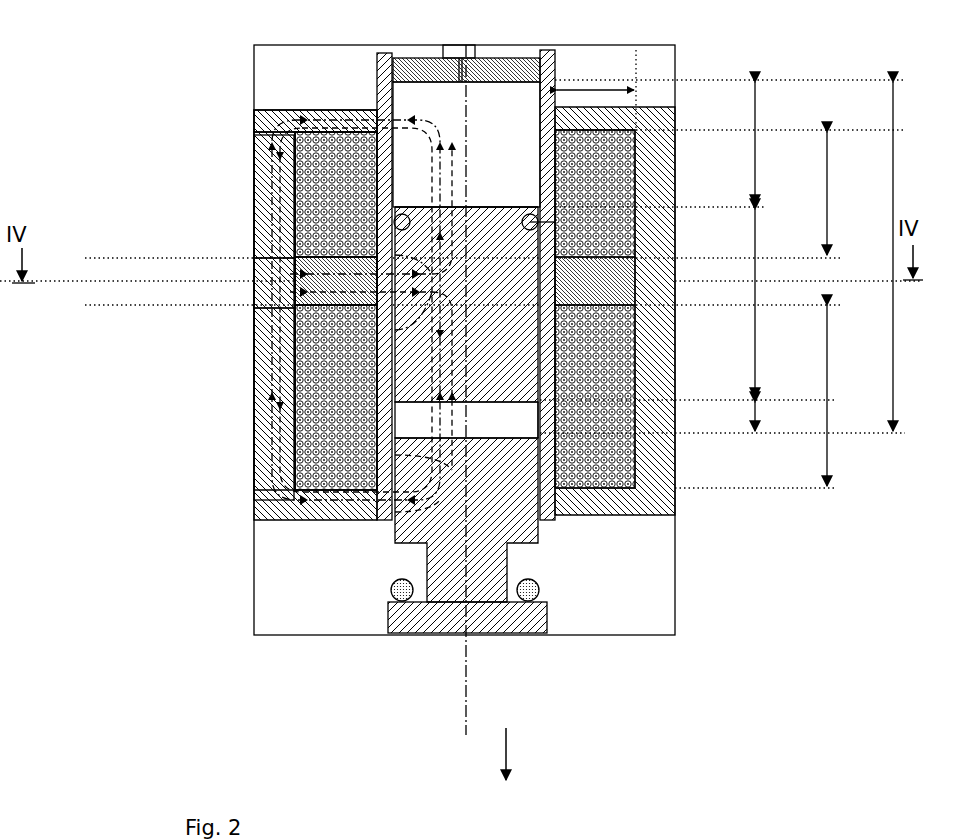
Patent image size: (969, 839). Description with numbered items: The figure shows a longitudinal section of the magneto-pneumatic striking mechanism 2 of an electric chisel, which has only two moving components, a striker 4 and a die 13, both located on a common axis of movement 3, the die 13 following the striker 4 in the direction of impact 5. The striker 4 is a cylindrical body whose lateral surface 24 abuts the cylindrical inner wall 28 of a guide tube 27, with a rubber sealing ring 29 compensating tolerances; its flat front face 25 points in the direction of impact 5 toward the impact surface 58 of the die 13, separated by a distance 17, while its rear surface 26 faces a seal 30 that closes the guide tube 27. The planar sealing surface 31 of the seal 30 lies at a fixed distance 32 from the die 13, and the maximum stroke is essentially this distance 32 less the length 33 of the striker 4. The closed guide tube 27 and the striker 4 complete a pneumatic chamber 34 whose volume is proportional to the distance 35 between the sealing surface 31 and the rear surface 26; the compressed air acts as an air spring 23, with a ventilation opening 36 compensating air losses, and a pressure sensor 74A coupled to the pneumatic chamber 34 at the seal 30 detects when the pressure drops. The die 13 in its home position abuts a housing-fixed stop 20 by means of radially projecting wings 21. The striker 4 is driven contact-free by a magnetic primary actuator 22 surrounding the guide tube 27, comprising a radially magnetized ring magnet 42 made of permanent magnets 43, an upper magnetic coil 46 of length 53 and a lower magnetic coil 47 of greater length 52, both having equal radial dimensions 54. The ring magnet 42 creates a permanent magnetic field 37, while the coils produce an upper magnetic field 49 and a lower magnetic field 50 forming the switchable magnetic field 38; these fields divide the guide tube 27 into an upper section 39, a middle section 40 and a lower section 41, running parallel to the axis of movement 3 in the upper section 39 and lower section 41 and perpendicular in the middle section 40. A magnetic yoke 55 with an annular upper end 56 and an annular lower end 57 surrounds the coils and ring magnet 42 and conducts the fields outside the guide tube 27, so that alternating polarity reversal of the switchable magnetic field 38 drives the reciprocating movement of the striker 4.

The striking mechanism 2 is at (120, 55).
The axis of movement 3 is at (466, 712).
The striker 4 is at (490, 325).
The direction of impact 5 is at (510, 745).
The die 13 is at (483, 538).
The distance 17 is at (757, 410).
The stop 20 is at (541, 590).
The wings 21 is at (545, 615).
The primary actuator 22 is at (142, 147).
The air spring 23 is at (422, 168).
The lateral surface 24 is at (548, 230).
The front face 25 is at (480, 412).
The rear surface 26 is at (475, 205).
The guide tube 27 is at (548, 440).
The inner wall 28 is at (520, 205).
The sealing ring 29 is at (553, 236).
The seal 30 is at (477, 93).
The sealing surface 31 is at (560, 97).
The distance 32 is at (893, 118).
The length 33 is at (755, 292).
The pneumatic chamber 34 is at (553, 148).
The distance 35 is at (755, 118).
The ventilation opening 36 is at (384, 242).
The permanent magnetic field 37 is at (300, 408).
The switchable magnetic field 38 is at (142, 265).
The upper section 39 is at (92, 135).
The middle section 40 is at (92, 258).
The lower section 41 is at (92, 308).
The ring magnet 42 is at (315, 258).
The permanent magnets 43 is at (315, 258).
The upper magnetic coil 46 is at (313, 180).
The lower magnetic coil 47 is at (300, 292).
The upper magnetic field 49 is at (300, 245).
The lower magnetic field 50 is at (300, 326).
The length 52 is at (827, 385).
The length 53 is at (827, 180).
The radial dimensions 54 is at (612, 88).
The magnetic yoke 55 is at (263, 450).
The upper end 56 is at (325, 110).
The lower end 57 is at (331, 518).
The impact surface 58 is at (480, 442).
The pressure sensor 74A is at (455, 52).